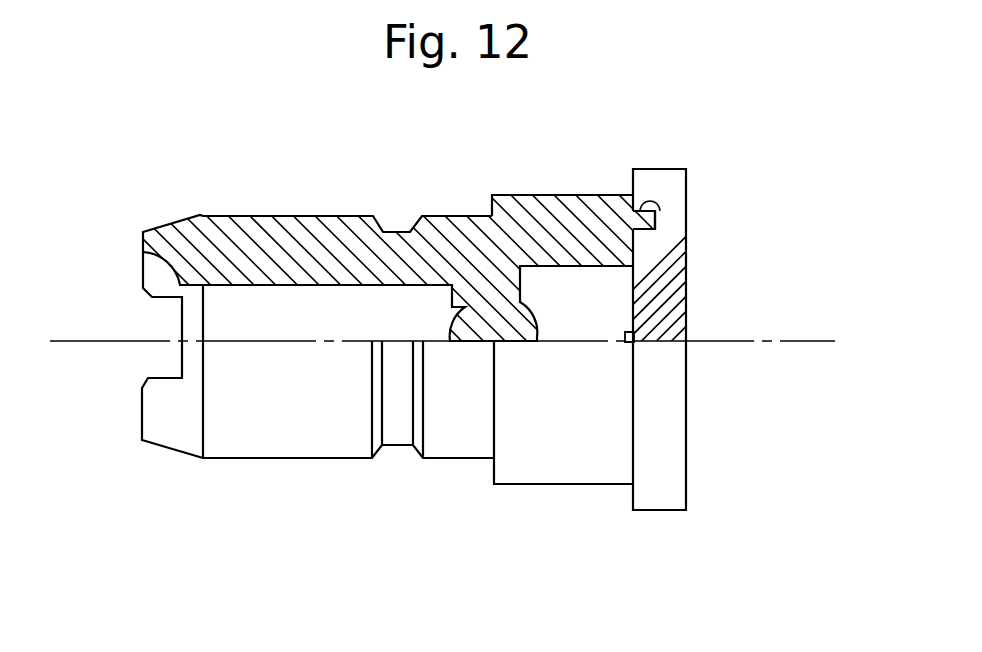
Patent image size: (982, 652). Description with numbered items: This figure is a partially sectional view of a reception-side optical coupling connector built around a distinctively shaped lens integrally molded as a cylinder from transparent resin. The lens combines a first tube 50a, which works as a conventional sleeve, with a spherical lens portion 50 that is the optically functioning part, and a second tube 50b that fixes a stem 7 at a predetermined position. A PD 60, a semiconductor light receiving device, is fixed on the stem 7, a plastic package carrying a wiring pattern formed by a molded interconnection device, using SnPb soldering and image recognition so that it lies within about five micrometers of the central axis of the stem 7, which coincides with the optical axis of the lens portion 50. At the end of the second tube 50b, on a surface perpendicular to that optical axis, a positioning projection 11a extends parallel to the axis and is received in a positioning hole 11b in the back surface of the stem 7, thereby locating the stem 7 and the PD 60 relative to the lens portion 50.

The lens portion 50 is at (503, 332).
The first tube 50a is at (306, 440).
The second tube 50b is at (565, 205).
The stem 7 is at (676, 495).
The PD 60 is at (630, 342).
The positioning projection 11a is at (644, 215).
The positioning hole 11b is at (656, 219).